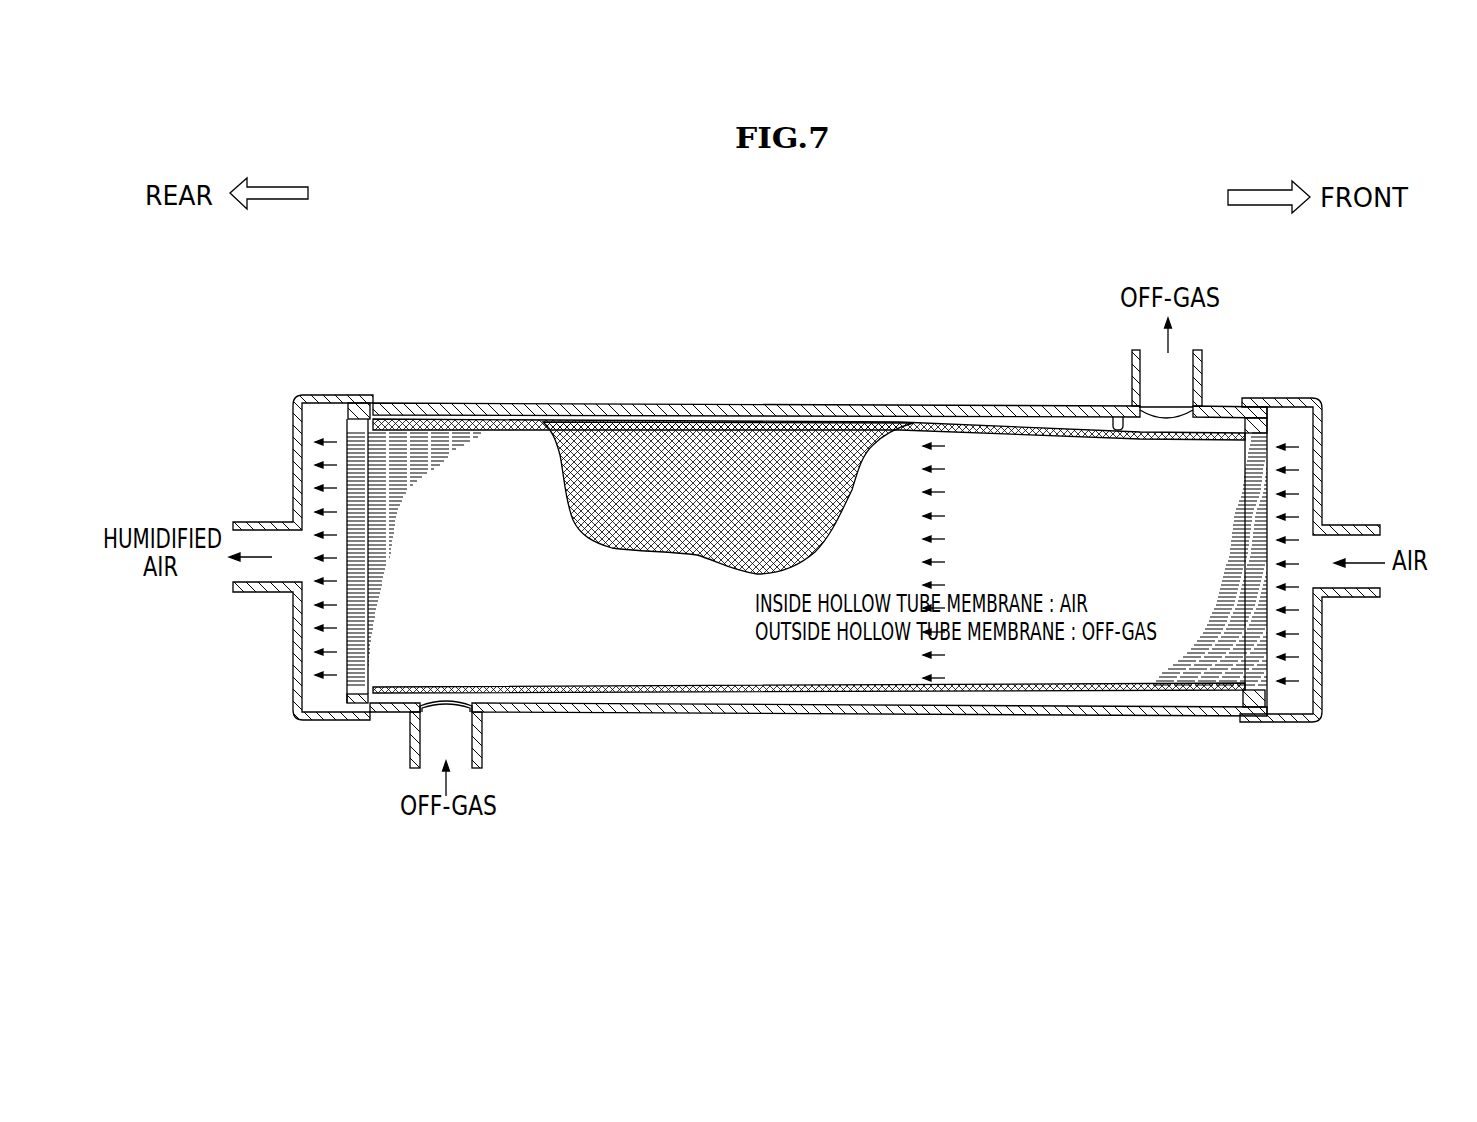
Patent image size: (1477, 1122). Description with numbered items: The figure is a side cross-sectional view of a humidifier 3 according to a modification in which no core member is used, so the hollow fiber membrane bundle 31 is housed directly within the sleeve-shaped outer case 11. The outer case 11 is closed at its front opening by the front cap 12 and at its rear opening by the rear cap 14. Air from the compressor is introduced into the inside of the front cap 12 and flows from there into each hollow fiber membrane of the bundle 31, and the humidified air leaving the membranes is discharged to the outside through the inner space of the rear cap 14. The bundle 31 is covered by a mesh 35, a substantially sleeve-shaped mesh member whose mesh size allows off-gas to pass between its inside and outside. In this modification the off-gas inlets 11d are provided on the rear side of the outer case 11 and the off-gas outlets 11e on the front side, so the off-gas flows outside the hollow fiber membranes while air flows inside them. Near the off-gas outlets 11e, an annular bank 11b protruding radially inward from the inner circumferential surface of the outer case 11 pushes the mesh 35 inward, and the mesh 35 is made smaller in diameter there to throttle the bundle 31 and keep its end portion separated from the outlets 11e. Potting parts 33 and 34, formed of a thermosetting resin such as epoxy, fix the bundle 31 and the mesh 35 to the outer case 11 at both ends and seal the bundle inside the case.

The humidifier 3 is at (754, 290).
The outer case 11 is at (667, 404).
The annular bank 11b is at (1113, 423).
The off-gas inlets 11d is at (462, 704).
The off-gas outlets 11e is at (1180, 412).
The front cap 12 is at (1322, 648).
The rear cap 14 is at (295, 690).
The hollow fiber membrane bundle 31 is at (388, 418).
The potting part 33 is at (1265, 703).
The potting part 34 is at (345, 412).
The mesh 35 is at (755, 418).